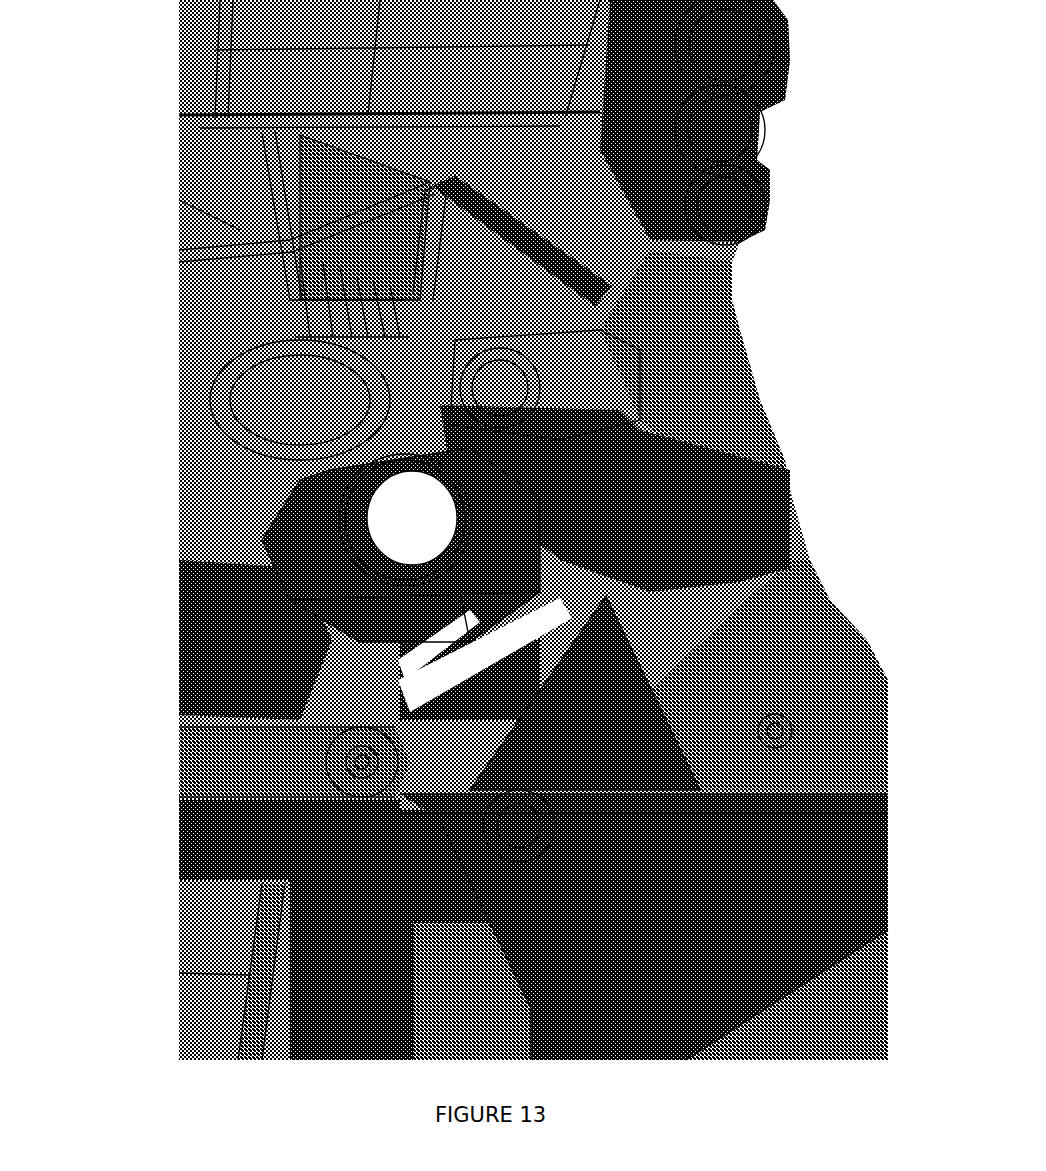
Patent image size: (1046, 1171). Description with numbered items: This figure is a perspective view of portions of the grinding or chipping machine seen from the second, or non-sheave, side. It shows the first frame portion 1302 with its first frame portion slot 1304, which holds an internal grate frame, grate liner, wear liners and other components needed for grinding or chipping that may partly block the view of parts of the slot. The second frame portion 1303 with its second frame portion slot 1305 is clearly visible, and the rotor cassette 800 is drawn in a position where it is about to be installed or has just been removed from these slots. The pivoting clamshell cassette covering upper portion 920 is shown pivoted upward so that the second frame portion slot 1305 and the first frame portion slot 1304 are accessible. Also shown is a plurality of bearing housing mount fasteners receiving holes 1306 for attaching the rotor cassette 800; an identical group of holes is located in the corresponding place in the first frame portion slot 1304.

The rotor cassette 800 is at (570, 558).
The pivoting clamshell cassette covering upper portion 920 is at (735, 985).
The first frame portion 1302 is at (585, 302).
The second frame portion 1303 is at (362, 217).
The first frame portion slot 1304 is at (413, 512).
The second frame portion slot 1305 is at (240, 413).
The bearing housing mount fasteners receiving holes 1306 is at (357, 320).